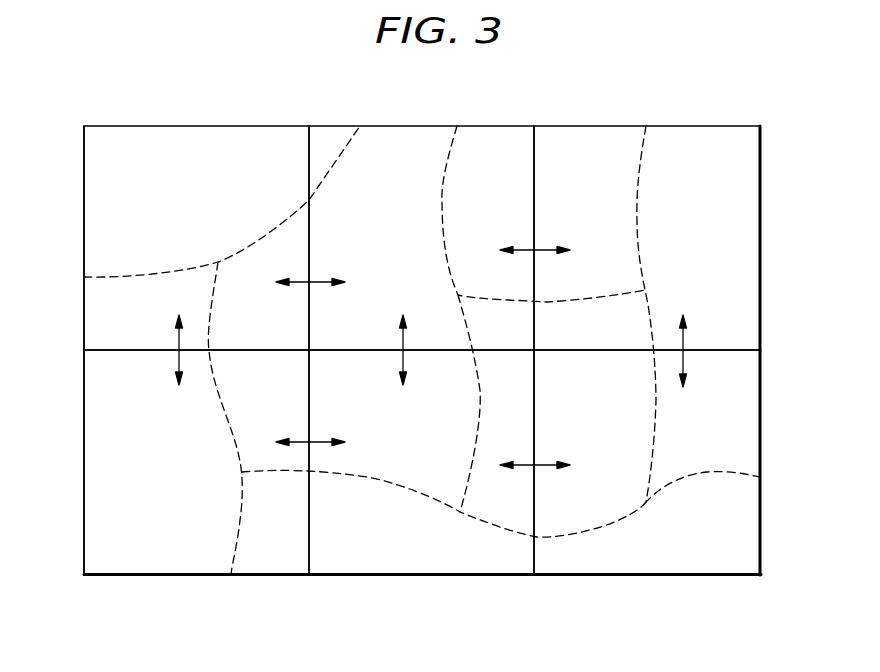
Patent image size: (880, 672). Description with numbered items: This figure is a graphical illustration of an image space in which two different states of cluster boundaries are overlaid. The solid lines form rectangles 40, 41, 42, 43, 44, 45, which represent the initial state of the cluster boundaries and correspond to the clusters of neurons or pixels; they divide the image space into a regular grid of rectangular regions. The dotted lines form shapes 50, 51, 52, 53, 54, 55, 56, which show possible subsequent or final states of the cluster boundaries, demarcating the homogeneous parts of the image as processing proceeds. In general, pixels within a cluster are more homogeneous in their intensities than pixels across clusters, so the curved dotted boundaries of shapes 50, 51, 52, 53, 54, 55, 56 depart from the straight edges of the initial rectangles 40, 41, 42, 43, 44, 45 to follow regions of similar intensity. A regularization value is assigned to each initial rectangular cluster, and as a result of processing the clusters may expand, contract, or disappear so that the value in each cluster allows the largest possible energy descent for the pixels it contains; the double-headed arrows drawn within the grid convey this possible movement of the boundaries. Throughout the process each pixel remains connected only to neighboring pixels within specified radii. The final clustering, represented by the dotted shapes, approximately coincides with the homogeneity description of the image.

The rectangle 40 is at (202, 147).
The rectangle 41 is at (415, 143).
The rectangle 42 is at (710, 157).
The rectangle 43 is at (735, 430).
The rectangle 44 is at (423, 550).
The rectangle 45 is at (178, 555).
The shape 50 is at (125, 231).
The shape 51 is at (367, 220).
The shape 52 is at (592, 160).
The shape 53 is at (730, 220).
The shape 54 is at (600, 463).
The shape 55 is at (703, 538).
The shape 56 is at (135, 457).